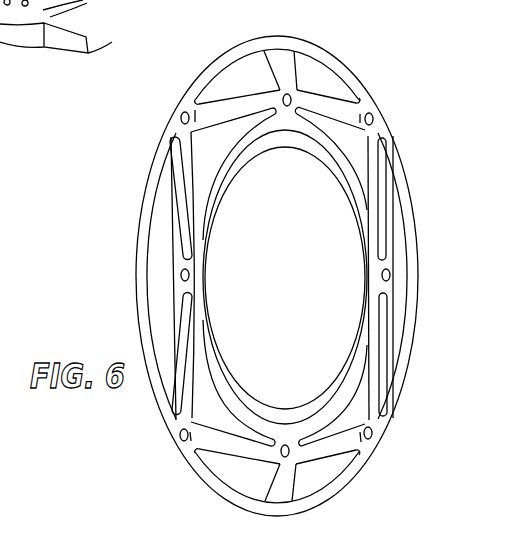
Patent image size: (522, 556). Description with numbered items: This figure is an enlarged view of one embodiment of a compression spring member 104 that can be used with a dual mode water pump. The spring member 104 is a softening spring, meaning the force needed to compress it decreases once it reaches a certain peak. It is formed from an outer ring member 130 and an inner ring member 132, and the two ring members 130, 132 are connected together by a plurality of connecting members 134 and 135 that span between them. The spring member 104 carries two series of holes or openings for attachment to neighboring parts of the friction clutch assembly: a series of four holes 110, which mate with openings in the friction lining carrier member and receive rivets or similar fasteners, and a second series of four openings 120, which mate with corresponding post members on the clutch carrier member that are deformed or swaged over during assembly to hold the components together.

The compression spring member 104 is at (108, 277).
The holes 110 is at (180, 118).
The openings 120 is at (282, 100).
The outer ring member 130 is at (408, 333).
The inner ring member 132 is at (364, 200).
The connecting members 134 is at (183, 206).
The connecting members 135 is at (223, 107).